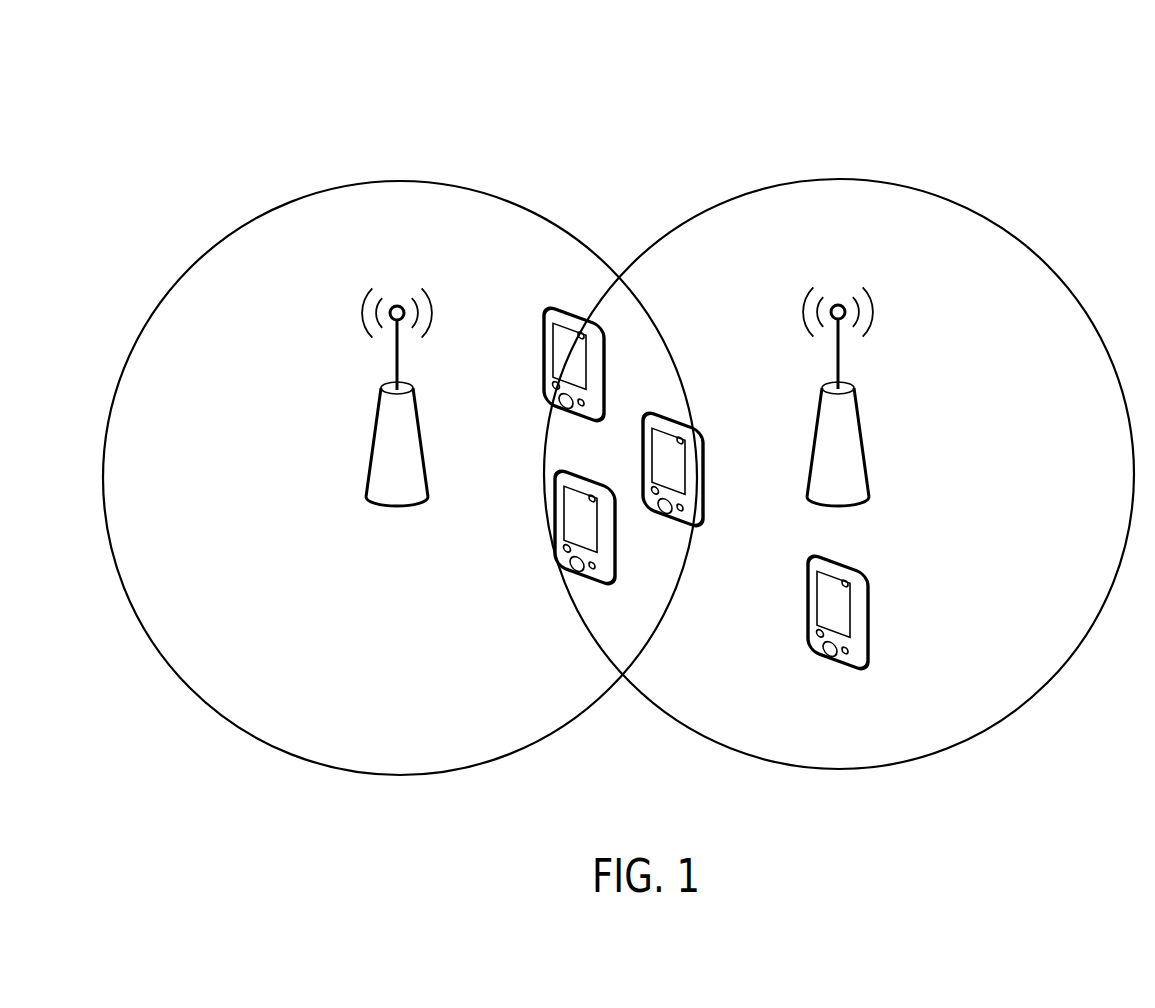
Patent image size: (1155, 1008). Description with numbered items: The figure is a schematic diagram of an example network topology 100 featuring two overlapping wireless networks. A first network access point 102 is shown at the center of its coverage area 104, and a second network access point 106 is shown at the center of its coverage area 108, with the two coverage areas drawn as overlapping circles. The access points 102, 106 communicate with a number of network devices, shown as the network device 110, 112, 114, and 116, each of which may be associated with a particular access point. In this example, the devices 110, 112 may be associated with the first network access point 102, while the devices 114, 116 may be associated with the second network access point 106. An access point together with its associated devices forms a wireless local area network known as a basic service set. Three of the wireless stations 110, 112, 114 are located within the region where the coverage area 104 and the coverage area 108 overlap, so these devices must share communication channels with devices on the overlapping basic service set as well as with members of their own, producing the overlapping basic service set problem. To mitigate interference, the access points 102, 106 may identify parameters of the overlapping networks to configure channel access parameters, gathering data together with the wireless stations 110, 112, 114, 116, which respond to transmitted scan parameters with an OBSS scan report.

The network topology 100 is at (1114, 41).
The first network access point 102 is at (421, 443).
The coverage area 104 is at (493, 197).
The second network access point 106 is at (862, 440).
The coverage area 108 is at (1017, 238).
The network device 110 is at (598, 322).
The network device 112 is at (568, 465).
The network device 114 is at (705, 470).
The network device 116 is at (870, 610).